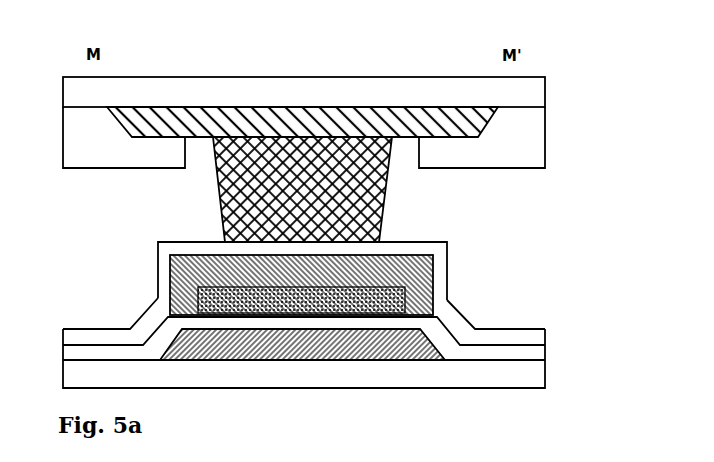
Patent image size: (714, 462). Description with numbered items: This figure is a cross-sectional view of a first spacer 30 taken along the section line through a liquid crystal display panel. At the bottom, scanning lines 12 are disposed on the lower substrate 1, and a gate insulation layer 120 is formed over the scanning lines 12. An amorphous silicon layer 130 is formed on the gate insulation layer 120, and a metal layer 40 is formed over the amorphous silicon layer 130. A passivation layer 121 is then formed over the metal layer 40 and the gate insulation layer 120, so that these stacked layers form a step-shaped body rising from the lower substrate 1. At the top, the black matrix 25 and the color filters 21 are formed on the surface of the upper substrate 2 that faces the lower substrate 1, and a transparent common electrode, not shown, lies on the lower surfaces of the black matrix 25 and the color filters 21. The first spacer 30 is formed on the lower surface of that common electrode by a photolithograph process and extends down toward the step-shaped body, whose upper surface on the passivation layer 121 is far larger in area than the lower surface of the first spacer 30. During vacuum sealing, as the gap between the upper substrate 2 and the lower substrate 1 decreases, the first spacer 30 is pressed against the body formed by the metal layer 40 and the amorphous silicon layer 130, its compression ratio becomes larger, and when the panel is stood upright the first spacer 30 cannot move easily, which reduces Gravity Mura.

The lower substrate 1 is at (527, 375).
The upper substrate 2 is at (530, 92).
The scanning lines 12 is at (425, 335).
The color filters 21 is at (528, 147).
The black matrix 25 is at (480, 117).
The first spacer 30 is at (387, 190).
The metal layer 40 is at (437, 262).
The gate insulation layer 120 is at (525, 350).
The passivation layer 121 is at (525, 335).
The amorphous silicon layer 130 is at (215, 303).